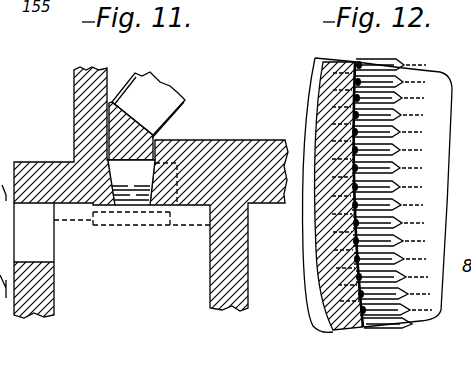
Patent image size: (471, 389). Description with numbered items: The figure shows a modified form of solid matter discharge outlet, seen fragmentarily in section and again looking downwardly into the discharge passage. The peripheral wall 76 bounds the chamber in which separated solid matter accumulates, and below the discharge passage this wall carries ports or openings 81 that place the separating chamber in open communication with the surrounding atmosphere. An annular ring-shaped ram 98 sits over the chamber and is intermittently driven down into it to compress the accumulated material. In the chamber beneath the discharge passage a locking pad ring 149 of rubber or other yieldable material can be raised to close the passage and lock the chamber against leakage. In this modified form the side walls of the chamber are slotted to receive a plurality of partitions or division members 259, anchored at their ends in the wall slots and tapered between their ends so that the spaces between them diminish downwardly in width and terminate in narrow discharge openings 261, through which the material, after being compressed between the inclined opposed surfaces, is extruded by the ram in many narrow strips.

In FIG. 11, the wall 76 is at (86, 97).
In FIG. 12, the wall 76 is at (322, 249).
In FIG. 11, the ports or openings 81 is at (40, 244).
In FIG. 11, the annular ring-shaped ram 98 is at (156, 138).
In FIG. 11, the locking pad ring 149 is at (148, 225).
In FIG. 11, the partitions or division members 259 is at (131, 182).
In FIG. 12, the partitions or division members 259 is at (391, 319).
In FIG. 12, the narrow discharge openings 261 is at (398, 303).